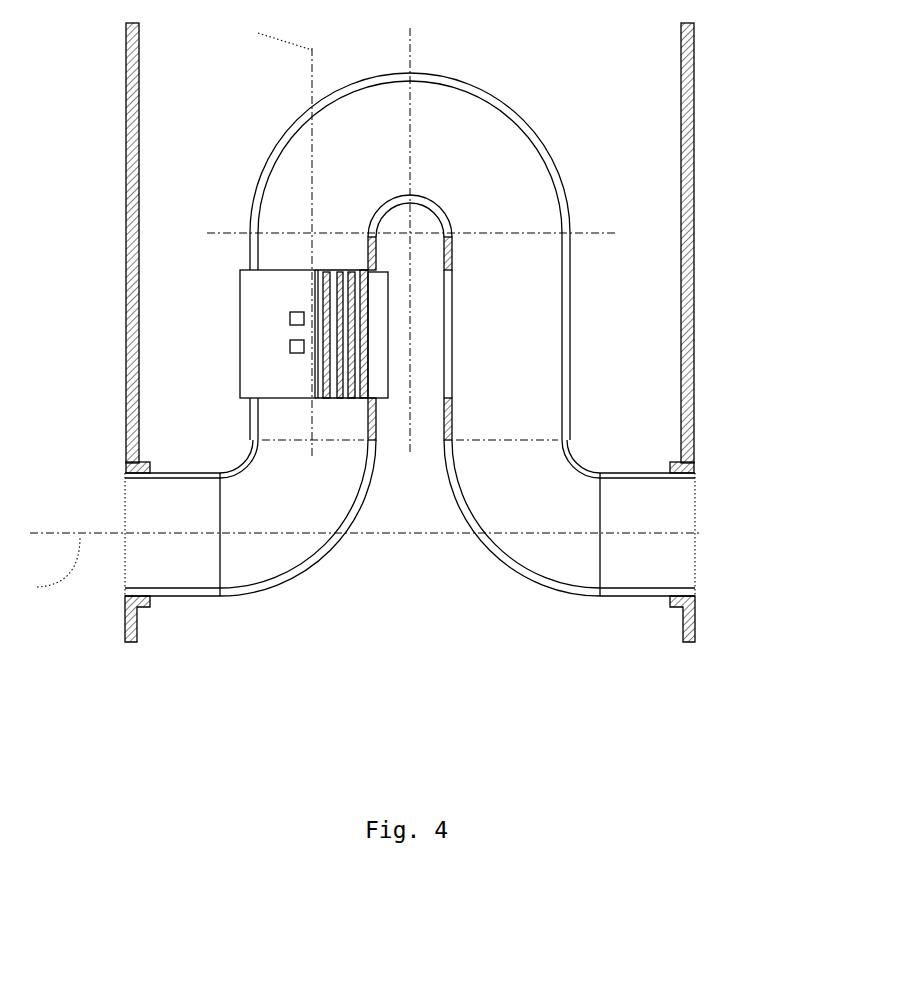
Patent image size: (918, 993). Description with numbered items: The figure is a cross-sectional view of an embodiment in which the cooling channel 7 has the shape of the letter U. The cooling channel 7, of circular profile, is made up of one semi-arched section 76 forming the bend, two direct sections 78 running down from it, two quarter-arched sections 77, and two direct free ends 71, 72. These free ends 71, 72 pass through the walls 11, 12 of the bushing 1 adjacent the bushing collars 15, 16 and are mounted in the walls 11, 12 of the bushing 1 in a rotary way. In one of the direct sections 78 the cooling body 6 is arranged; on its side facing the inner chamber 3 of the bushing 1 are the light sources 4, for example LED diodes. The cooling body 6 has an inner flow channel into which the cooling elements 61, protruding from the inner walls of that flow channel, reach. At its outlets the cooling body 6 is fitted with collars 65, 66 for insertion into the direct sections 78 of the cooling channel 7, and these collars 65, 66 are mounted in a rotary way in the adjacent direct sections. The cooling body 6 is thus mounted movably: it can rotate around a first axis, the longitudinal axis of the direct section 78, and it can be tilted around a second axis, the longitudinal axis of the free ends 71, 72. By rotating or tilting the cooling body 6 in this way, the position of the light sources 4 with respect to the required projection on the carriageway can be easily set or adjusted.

The bushing 1 is at (413, 360).
The inner chamber 3 is at (668, 162).
The light sources 4 is at (313, 345).
The cooling body 6 is at (268, 317).
The cooling channel 7 is at (357, 516).
The wall of the bushing 11 is at (240, 273).
The wall of the bushing 12 is at (697, 273).
The bushing collar 15 is at (133, 440).
The bushing collar 16 is at (693, 420).
The cooling elements 61 is at (315, 374).
The collar 65 is at (248, 418).
The collar 66 is at (250, 245).
The direct free end 71 is at (180, 600).
The direct free end 72 is at (650, 600).
The semi-arched section 76 is at (483, 138).
The quarter-arched sections 77 is at (303, 535).
The direct sections 78 is at (577, 373).